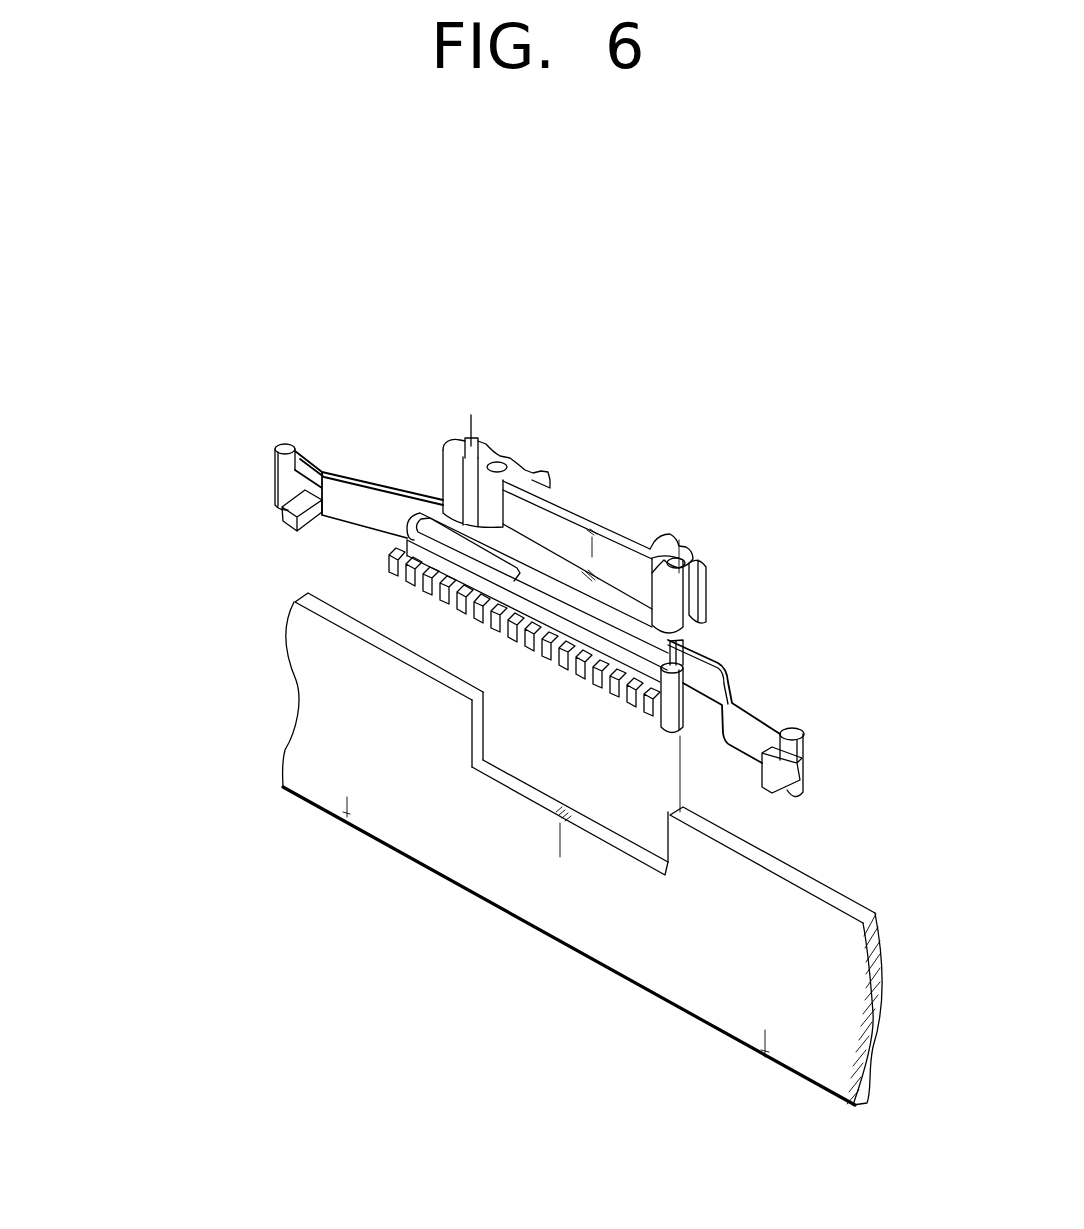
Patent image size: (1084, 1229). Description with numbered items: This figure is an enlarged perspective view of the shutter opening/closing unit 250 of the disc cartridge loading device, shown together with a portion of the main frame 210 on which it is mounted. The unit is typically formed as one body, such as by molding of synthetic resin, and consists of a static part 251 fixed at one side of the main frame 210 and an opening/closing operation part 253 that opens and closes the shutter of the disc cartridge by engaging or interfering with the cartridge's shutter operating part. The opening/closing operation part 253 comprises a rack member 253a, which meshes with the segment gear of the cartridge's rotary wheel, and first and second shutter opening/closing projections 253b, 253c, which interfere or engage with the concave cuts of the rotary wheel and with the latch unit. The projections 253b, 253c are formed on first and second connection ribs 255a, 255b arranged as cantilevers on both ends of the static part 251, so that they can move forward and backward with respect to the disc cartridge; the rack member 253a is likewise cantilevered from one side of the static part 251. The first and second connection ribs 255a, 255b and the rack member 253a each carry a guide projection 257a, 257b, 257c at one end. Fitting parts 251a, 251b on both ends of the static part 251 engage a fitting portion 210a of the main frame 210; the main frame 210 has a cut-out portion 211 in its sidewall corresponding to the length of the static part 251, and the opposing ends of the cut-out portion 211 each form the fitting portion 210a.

The main frame 210 is at (733, 1015).
The fitting portion 210a is at (482, 723).
The cut-out portion 211 is at (668, 838).
The shutter opening/closing unit 250 is at (733, 297).
The static part 251 is at (594, 512).
The fitting part 251a is at (690, 562).
The fitting part 251b is at (475, 450).
The opening/closing operation part 253 is at (142, 565).
The rack member 253a is at (410, 592).
The first shutter opening/closing projection 253b is at (762, 785).
The second shutter opening/closing projection 253c is at (281, 512).
The first connection rib 255a is at (808, 704).
The second connection rib 255b is at (330, 446).
The guide projection 257a is at (805, 780).
The guide projection 257b is at (661, 719).
The guide projection 257c is at (281, 445).